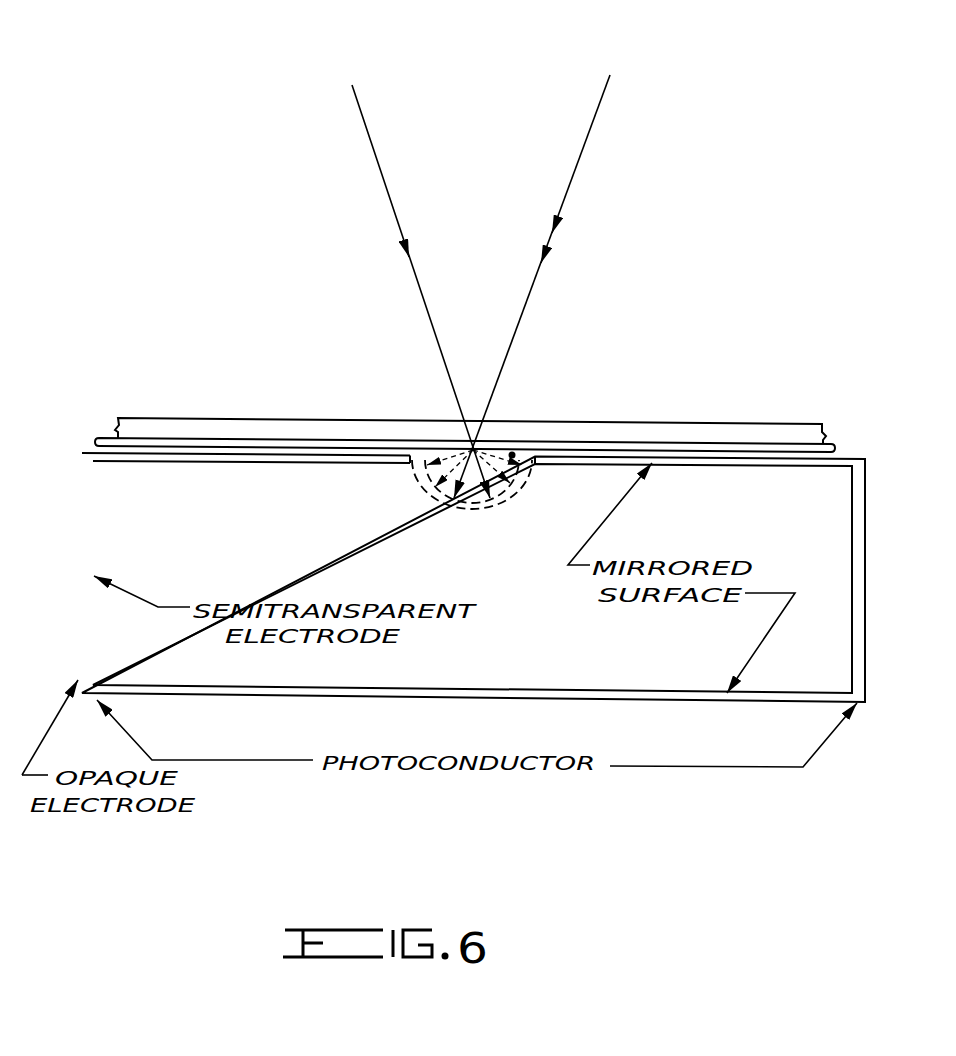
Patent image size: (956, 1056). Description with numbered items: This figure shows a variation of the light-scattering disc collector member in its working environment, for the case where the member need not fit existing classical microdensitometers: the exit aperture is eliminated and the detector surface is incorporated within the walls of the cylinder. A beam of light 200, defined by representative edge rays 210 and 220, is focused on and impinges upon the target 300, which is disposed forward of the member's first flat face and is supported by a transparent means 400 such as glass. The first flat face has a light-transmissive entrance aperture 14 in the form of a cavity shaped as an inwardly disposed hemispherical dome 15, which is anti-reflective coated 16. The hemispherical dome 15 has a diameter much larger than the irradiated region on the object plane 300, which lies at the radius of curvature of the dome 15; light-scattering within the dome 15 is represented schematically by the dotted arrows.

The beam of light 200 is at (500, 131).
The edge ray 210 is at (563, 212).
The edge ray 220 is at (388, 188).
The target 300 is at (103, 440).
The transparent means 400 is at (300, 377).
The light-transmissive entrance aperture 14 is at (512, 455).
The hemispherical dome 15 is at (428, 497).
The anti-reflective coating 16 is at (517, 492).